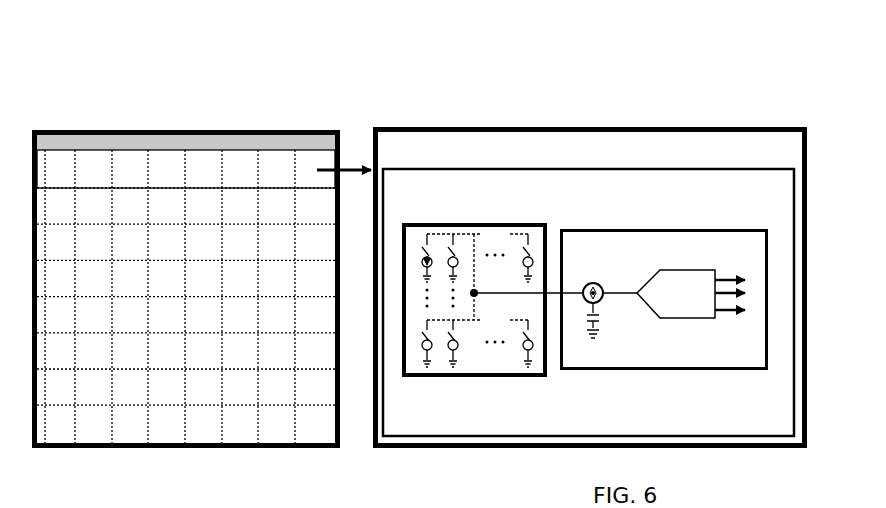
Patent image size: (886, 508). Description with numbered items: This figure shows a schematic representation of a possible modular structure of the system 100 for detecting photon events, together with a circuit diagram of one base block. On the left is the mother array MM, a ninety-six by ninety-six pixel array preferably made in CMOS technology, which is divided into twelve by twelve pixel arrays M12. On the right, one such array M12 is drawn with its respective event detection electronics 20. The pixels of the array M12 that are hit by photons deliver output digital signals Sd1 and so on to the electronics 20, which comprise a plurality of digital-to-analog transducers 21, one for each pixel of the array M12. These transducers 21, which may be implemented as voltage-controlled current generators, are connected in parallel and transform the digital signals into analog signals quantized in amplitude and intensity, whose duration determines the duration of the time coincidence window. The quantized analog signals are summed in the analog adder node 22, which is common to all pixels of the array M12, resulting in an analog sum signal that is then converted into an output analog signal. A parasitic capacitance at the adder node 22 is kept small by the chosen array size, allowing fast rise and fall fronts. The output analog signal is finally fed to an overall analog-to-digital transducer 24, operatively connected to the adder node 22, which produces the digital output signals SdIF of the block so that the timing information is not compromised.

The modular and scalable system 100 is at (190, 85).
The 12×12-pixel array M12 is at (125, 160).
The mother array MM is at (200, 128).
The output digital signals Sd1 is at (349, 160).
The event detection electronics 20 is at (733, 165).
The digital-to-analog transducers 21 is at (454, 257).
The analog adder node 22 is at (593, 282).
The analog-to-digital transducer 24 is at (690, 320).
The digital output signals Sd1F..SdyF SdIF is at (727, 314).